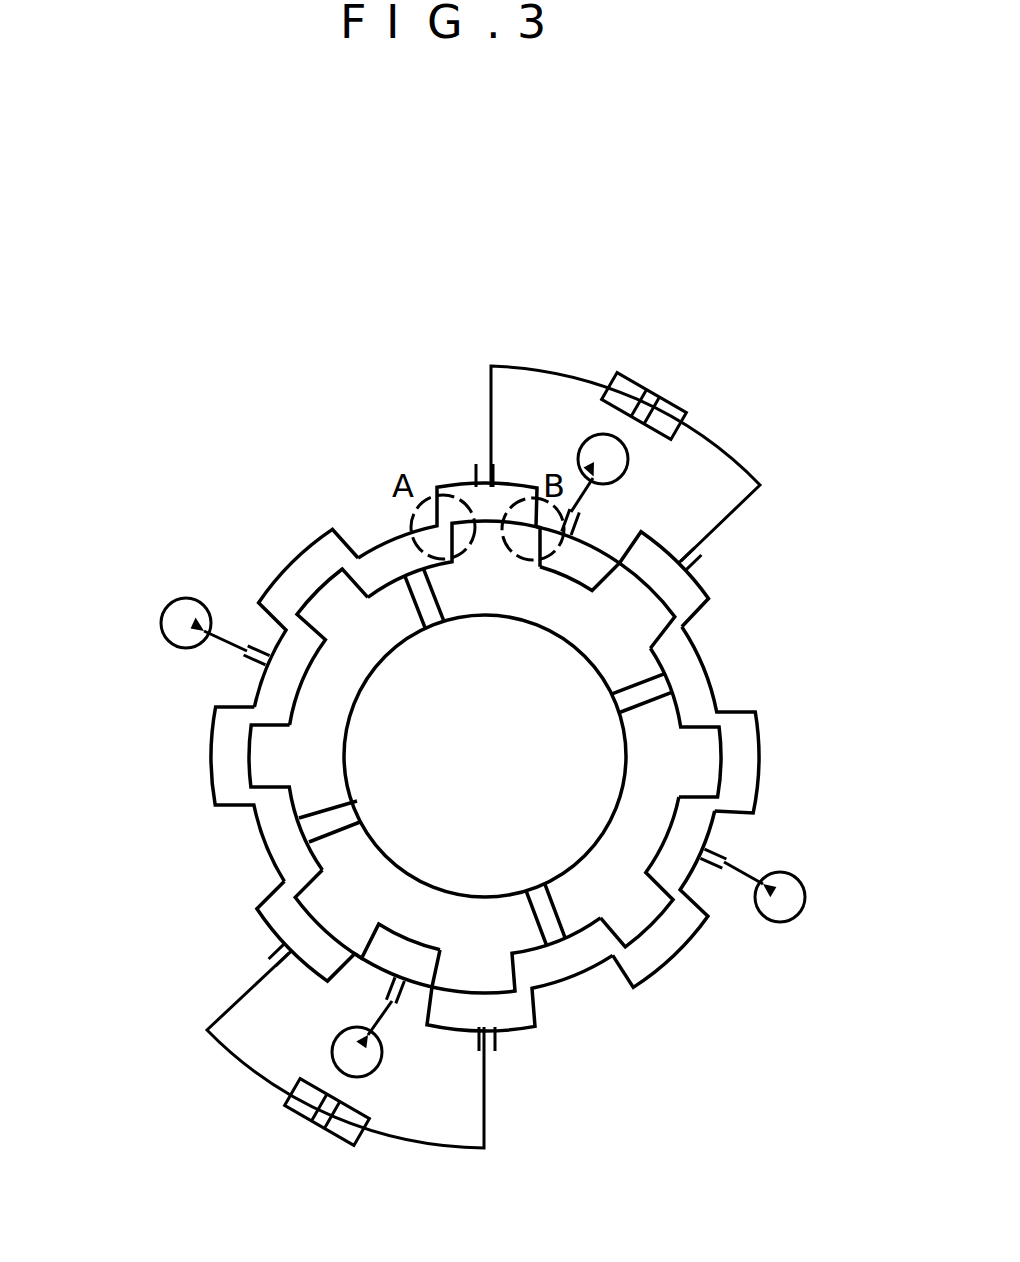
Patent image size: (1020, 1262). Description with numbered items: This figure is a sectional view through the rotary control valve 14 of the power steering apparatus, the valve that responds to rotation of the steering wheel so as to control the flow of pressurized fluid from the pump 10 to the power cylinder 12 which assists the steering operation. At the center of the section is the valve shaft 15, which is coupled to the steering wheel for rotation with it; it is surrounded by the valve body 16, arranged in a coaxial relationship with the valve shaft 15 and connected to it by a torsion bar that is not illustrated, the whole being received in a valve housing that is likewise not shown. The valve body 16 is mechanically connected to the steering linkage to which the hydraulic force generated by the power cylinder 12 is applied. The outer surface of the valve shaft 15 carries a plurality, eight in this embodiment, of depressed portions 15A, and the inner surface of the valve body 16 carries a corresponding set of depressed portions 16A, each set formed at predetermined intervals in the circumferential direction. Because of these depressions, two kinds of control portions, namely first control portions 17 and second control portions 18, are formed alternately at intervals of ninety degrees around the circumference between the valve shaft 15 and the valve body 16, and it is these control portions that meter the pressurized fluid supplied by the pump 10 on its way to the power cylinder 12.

The pump 10 is at (630, 461).
The power cylinder 12 is at (672, 425).
The rotary control valve 14 is at (197, 474).
The valve shaft 15 is at (659, 730).
The depressed portions 15A is at (653, 652).
The valve body 16 is at (362, 530).
The depressed portions 16A is at (703, 590).
The first control portions 17 is at (472, 458).
The second control portions 18 is at (203, 698).